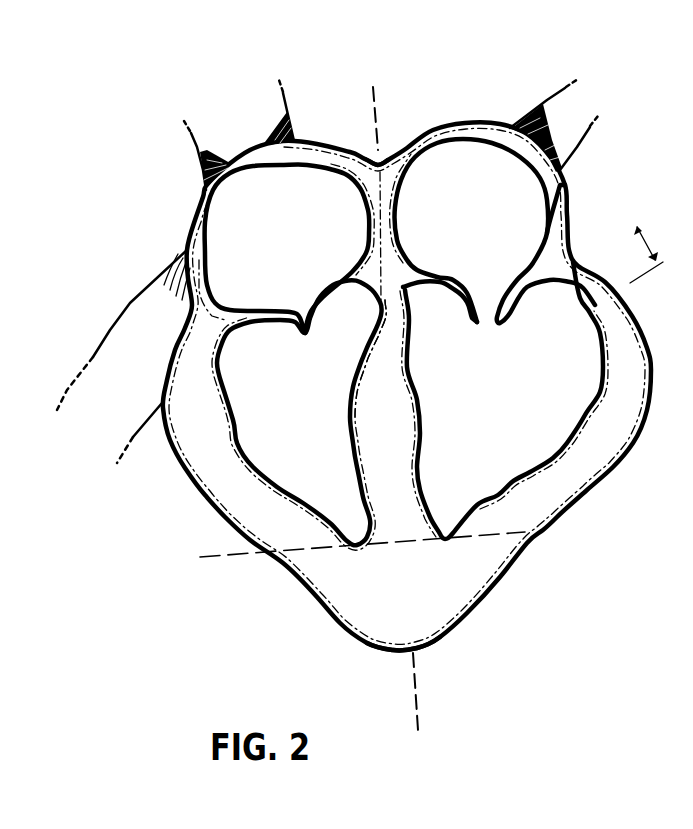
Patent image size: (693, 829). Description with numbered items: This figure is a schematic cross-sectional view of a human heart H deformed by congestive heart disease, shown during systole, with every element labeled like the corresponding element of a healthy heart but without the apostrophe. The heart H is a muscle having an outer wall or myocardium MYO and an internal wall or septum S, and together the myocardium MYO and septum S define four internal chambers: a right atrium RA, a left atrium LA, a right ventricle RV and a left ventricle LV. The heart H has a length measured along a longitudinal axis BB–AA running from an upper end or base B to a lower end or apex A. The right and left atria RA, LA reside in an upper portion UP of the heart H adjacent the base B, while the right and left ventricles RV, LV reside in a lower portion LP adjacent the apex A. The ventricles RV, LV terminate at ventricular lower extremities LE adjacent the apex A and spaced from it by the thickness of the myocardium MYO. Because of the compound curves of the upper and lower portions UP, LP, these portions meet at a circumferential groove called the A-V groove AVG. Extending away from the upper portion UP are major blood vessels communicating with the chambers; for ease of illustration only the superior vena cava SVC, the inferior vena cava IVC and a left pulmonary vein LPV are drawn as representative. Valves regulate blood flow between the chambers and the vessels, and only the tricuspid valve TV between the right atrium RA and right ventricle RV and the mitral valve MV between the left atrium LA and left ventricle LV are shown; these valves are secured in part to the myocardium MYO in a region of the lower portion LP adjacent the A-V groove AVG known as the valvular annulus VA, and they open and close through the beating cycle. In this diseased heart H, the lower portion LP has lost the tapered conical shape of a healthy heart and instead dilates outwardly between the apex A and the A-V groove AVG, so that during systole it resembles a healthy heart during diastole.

The myocardium MYO is at (193, 467).
The right atrium RA is at (290, 238).
The left atrium LA is at (478, 206).
The right ventricle RV is at (305, 406).
The left ventricle LV is at (503, 404).
The upper portion UP is at (566, 226).
The septum S is at (405, 448).
The lower portion LP is at (580, 503).
The tricuspid valve TV is at (268, 306).
The mitral valve MV is at (512, 281).
The superior vena cava SVC is at (205, 170).
The left pulmonary vein LPV is at (540, 113).
The inferior vena cava IVC is at (107, 333).
The longitudinal axis upper end BB is at (371, 106).
The base B is at (395, 150).
The A-V groove AVG is at (572, 258).
The valvular annulus VA is at (650, 245).
The ventricular lower extremities LE is at (543, 530).
The heart H is at (237, 607).
The apex A is at (417, 650).
The longitudinal axis lower end AA is at (421, 706).